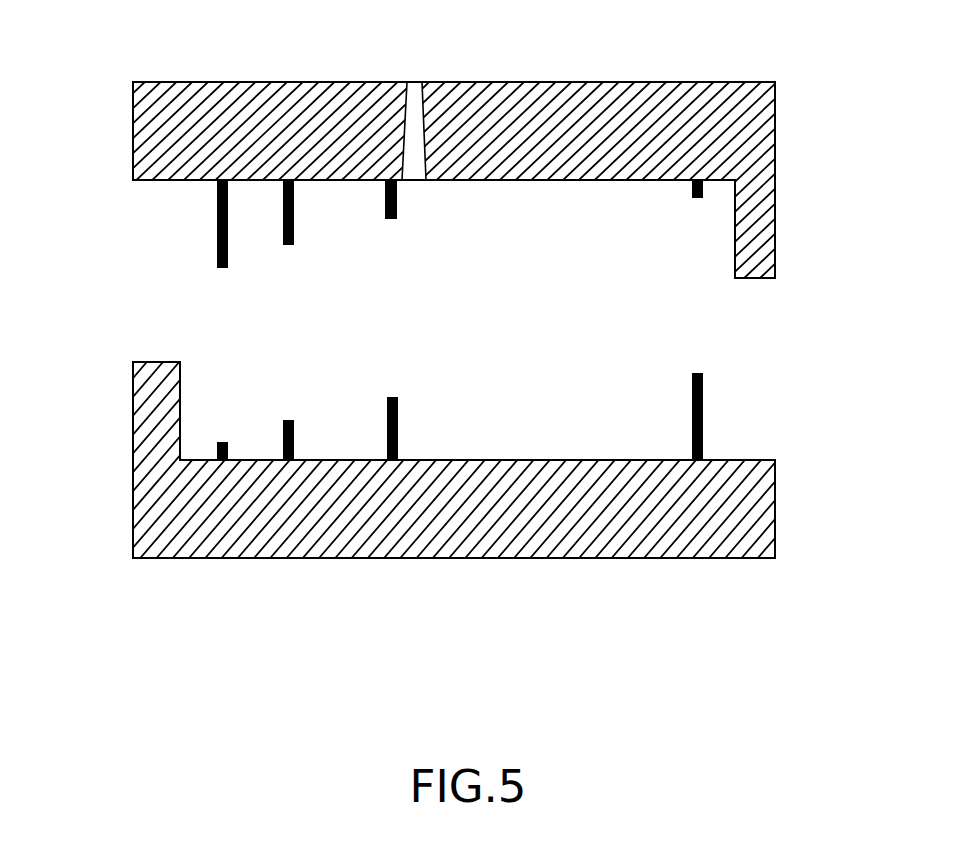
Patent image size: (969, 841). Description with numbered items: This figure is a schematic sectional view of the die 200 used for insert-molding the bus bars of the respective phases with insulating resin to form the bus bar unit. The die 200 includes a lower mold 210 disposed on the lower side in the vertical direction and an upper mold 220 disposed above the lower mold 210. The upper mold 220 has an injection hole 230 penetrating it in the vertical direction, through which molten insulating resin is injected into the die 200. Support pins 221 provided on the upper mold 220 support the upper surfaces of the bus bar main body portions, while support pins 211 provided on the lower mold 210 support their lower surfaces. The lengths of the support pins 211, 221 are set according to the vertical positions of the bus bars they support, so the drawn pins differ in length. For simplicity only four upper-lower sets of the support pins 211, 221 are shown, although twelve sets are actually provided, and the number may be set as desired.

The die 200 is at (118, 97).
The lower mold 210 is at (765, 515).
The support pins 211 is at (392, 461).
The upper mold 220 is at (765, 151).
The support pins 221 is at (391, 180).
The injection hole 230 is at (418, 100).